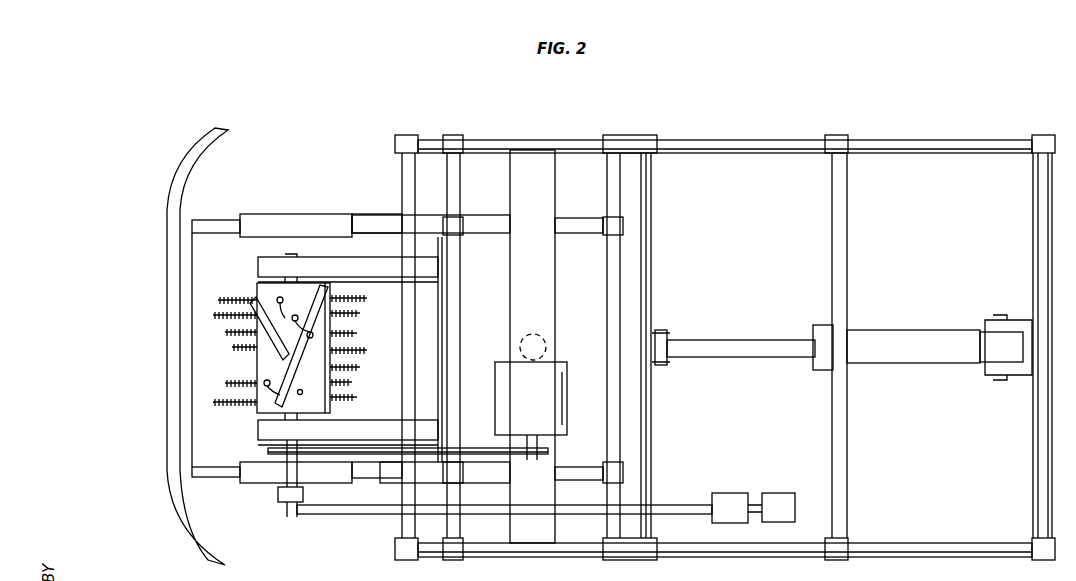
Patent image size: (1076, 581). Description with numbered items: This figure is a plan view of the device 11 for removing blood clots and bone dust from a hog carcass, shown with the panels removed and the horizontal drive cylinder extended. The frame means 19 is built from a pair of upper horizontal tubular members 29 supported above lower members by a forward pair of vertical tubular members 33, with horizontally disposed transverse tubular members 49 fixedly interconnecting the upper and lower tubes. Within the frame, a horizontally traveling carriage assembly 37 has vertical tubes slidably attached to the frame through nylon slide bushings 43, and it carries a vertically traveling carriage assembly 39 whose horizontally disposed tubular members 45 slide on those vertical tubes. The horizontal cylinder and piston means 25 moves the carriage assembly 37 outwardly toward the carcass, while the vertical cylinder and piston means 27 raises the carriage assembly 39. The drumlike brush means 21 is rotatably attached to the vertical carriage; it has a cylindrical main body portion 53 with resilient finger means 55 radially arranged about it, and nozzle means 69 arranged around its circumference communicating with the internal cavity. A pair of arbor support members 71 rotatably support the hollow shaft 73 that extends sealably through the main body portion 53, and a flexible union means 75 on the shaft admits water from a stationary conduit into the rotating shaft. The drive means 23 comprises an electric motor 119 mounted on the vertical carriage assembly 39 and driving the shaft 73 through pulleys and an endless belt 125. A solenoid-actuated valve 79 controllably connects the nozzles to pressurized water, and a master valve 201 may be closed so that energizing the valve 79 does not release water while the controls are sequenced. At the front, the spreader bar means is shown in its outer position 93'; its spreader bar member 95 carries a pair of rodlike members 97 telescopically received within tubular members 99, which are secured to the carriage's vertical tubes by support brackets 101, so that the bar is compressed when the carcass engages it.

The device 11 is at (288, 82).
The frame means 19 is at (998, 138).
The brush means 21 is at (233, 420).
The drive means 23 is at (360, 460).
The horizontal cylinder and piston means 25 is at (927, 352).
The vertical cylinder and piston means 27 is at (545, 340).
The upper horizontal tubular members 29 is at (908, 145).
The forward vertical tubular members 33 is at (305, 512).
The horizontally traveling carriage assembly 37 is at (648, 272).
The vertically traveling carriage assembly 39 is at (490, 233).
The nylon slide bushings 43 is at (652, 580).
The horizontally disposed tubular members 45 is at (575, 225).
The transverse tubular members 49 is at (402, 178).
The cylindrical main body portion 53 is at (312, 295).
The resilient finger means 55 is at (242, 315).
The nozzle means 69 is at (288, 346).
The arbor support members 71 is at (330, 265).
The shaft 73 is at (270, 455).
The flexible union means 75 is at (277, 495).
The solenoid-actuated valve 79 is at (730, 503).
The outer position of spreader bar means 93' is at (279, 154).
The spreader bar member 95 is at (195, 172).
The rodlike members 97 is at (218, 220).
The tubular members 99 is at (258, 222).
The support brackets 101 is at (370, 225).
The electric motor 119 is at (532, 409).
The endless belt 125 is at (478, 450).
The master valve 201 is at (778, 505).